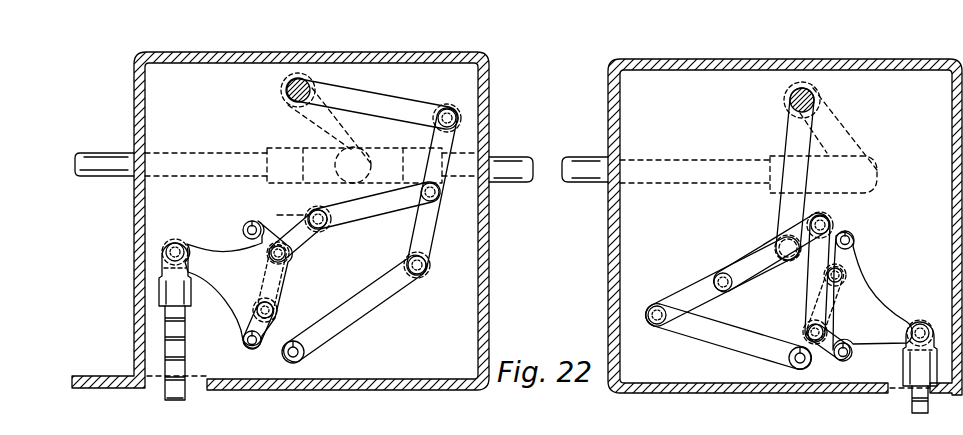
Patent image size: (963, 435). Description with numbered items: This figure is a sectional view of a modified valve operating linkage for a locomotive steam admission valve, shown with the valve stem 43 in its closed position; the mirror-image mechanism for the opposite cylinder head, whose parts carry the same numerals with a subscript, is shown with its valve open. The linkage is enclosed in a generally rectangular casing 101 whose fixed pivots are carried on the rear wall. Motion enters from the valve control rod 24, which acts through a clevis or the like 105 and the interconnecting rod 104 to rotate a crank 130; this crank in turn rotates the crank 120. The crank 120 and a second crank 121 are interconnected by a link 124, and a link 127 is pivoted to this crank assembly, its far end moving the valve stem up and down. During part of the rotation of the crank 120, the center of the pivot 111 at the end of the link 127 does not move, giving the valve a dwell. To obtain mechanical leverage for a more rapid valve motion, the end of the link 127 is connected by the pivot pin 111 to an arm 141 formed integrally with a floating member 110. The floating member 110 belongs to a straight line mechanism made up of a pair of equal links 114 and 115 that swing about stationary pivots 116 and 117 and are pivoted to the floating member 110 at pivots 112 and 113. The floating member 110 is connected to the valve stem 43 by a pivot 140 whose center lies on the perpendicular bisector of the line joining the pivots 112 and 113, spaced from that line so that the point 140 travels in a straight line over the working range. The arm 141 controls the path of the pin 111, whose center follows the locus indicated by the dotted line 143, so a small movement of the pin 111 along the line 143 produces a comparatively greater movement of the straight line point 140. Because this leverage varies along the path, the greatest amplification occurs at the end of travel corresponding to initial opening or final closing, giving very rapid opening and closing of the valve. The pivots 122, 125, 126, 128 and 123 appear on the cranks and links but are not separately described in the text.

The casing 101 is at (195, 52).
The valve control rod 24 is at (110, 175).
The rod 104 is at (568, 195).
The clevis 105 is at (289, 148).
The crank 130 is at (295, 118).
The pivot shaft 122 is at (284, 88).
The crank 120 is at (385, 98).
The pivot pin 125 is at (472, 100).
The link 124 is at (430, 242).
The pivot pin 128 is at (440, 194).
The link 127 is at (360, 218).
The pivot pin 126 is at (422, 275).
The crank 121 is at (372, 305).
The pivot pin 123 is at (303, 358).
The pivot pin 111 is at (330, 210).
The dotted locus line 143 is at (296, 213).
The arm 141 is at (315, 249).
The pivot 113 is at (283, 262).
The link 114 is at (267, 329).
The floating member 110 is at (222, 275).
The stationary pivot 117 is at (247, 227).
The link 115 is at (270, 252).
The pivot 112 is at (274, 306).
The stationary pivot 116 is at (243, 344).
The pivot 140 is at (193, 245).
The valve stem 43 is at (165, 329).